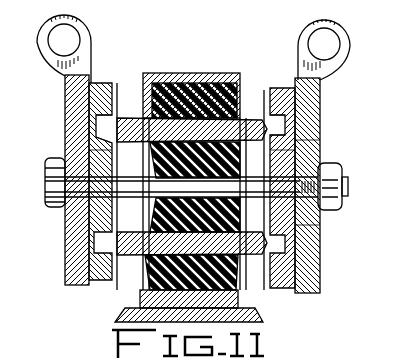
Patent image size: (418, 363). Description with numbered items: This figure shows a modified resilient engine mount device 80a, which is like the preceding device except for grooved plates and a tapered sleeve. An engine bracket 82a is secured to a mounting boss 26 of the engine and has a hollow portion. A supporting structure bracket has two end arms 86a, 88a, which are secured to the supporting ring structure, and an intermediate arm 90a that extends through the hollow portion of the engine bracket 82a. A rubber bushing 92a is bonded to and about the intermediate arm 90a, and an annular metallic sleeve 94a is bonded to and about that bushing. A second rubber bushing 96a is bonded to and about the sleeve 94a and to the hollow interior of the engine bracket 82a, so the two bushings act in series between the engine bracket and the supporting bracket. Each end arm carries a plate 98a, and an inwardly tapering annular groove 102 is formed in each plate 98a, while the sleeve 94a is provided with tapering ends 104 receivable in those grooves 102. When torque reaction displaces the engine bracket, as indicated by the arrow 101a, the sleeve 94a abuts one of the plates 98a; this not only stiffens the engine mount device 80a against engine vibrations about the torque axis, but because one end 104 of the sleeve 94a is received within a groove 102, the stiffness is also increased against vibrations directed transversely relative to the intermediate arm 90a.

The resilient engine mount device 80a is at (247, 45).
The engine bracket 82a is at (193, 63).
The end arm 86a is at (329, 72).
The end arm 88a is at (72, 93).
The intermediate arm 90a is at (305, 150).
The rubber bushing 92a is at (312, 226).
The annular metallic sleeve 94a is at (241, 98).
The second rubber bushing 96a is at (143, 90).
The plate 98a is at (98, 83).
The direction of movement 101a is at (96, 316).
The inwardly tapering annular groove 102 is at (100, 126).
The tapering end 104 is at (111, 148).
The mounting boss 26 is at (250, 313).